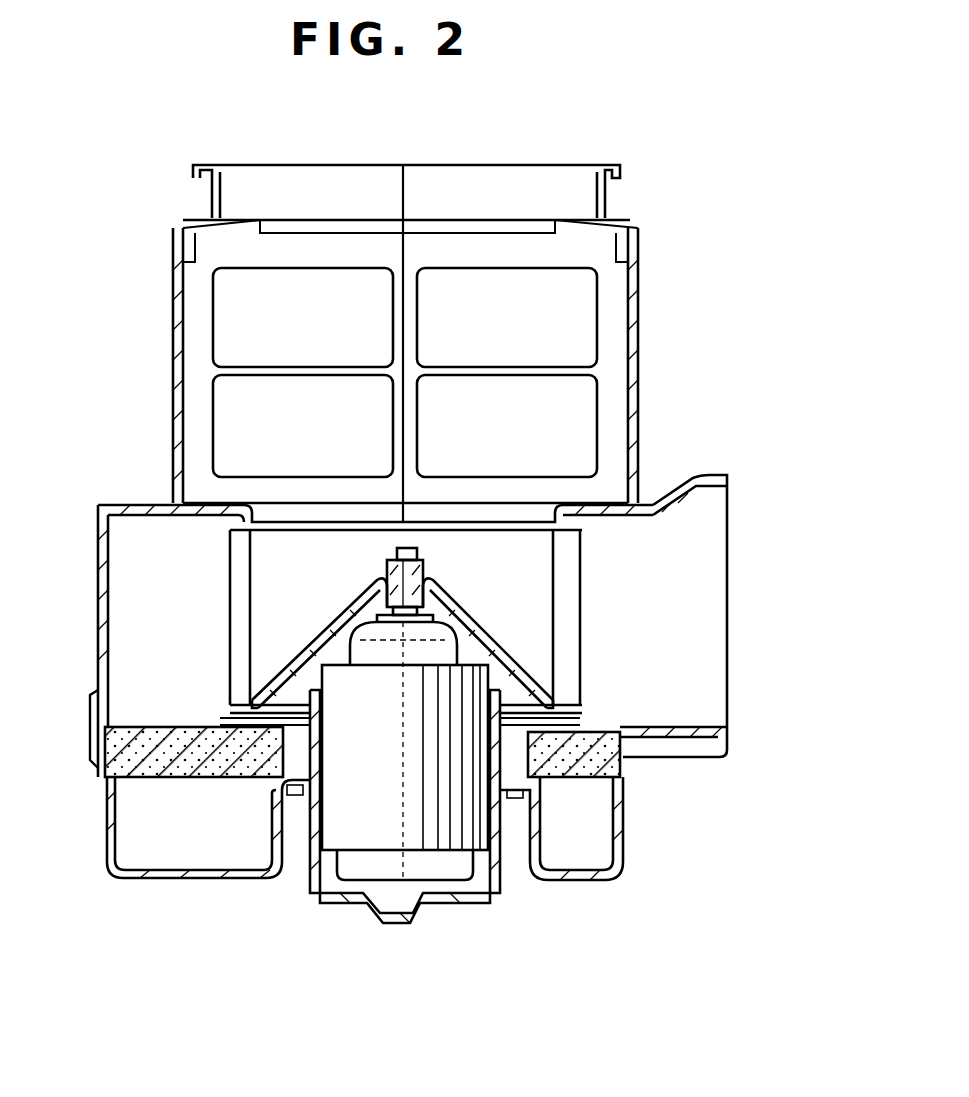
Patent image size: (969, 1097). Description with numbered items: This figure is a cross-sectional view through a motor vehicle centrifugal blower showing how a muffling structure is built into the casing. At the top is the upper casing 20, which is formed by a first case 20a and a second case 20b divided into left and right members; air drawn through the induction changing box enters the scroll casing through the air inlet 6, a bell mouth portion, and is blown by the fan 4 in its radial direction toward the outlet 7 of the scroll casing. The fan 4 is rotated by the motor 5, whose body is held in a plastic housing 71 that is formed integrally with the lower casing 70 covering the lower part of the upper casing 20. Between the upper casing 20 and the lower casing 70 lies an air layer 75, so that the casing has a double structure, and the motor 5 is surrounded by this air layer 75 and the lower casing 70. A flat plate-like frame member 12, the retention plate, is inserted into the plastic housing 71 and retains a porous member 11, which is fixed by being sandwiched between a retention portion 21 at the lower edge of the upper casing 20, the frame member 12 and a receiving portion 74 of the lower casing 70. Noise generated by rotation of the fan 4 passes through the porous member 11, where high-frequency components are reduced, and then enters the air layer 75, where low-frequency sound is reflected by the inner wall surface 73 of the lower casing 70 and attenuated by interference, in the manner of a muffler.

The upper casing 20 is at (502, 165).
The first case 20a is at (190, 340).
The second case 20b is at (625, 312).
The air inlet (bell mouth portion) 6 is at (540, 512).
The outlet 7 is at (718, 608).
The fan 4 is at (232, 596).
The frame member (retention plate) 12 is at (582, 722).
The motor 5 is at (337, 838).
The plastic housing 71 is at (503, 883).
The receiving portion 74 is at (100, 783).
The retention portion 21 is at (115, 725).
The lower casing 70 is at (607, 878).
The inner wall surface 73 is at (183, 871).
The air layer 75 is at (601, 835).
The porous member 11 is at (625, 764).